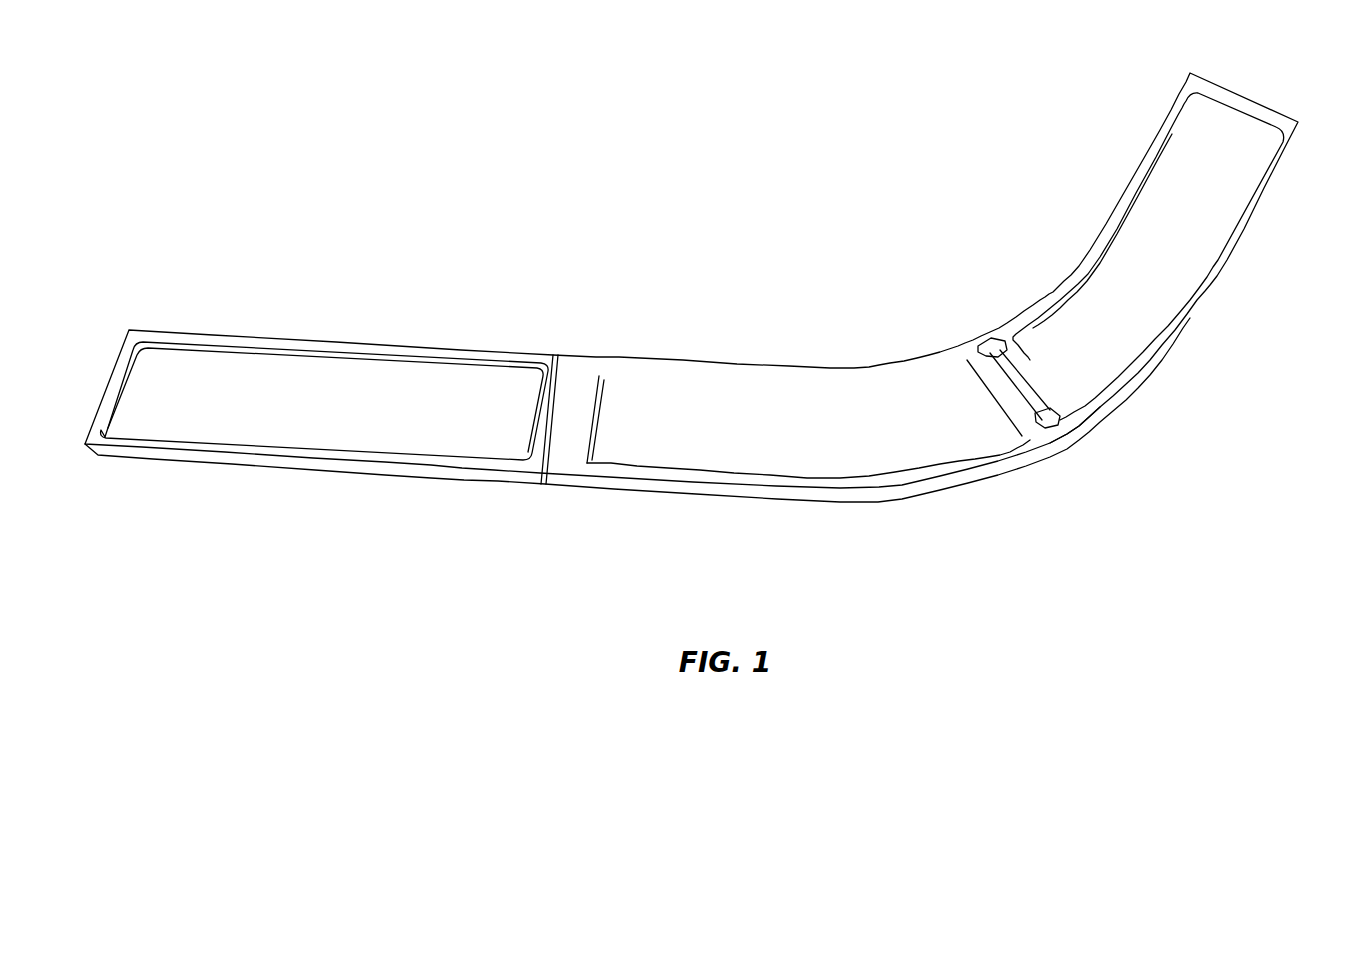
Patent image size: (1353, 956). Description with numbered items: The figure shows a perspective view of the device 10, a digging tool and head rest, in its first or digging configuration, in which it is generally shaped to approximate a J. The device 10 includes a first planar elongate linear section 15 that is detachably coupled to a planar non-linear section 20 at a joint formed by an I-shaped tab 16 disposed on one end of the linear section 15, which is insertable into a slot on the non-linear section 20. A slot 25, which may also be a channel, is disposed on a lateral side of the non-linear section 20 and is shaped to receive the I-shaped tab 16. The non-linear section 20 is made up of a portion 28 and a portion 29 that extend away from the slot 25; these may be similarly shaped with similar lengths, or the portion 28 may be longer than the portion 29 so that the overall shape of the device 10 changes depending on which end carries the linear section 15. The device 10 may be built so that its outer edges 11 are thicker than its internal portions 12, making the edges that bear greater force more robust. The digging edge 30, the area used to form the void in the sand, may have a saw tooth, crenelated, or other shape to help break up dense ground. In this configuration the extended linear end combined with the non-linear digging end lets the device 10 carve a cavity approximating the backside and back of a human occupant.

The device 10 is at (583, 273).
The outer edges 11 is at (177, 457).
The internal portions 12 is at (205, 385).
The planar elongate linear section 15 is at (352, 395).
The I-shaped tab 16 is at (543, 447).
The planar non-linear section 20 is at (848, 408).
The slot 25 is at (1072, 410).
The portion 28 is at (717, 455).
The portion 29 is at (1187, 148).
The digging edge 30 is at (1068, 466).